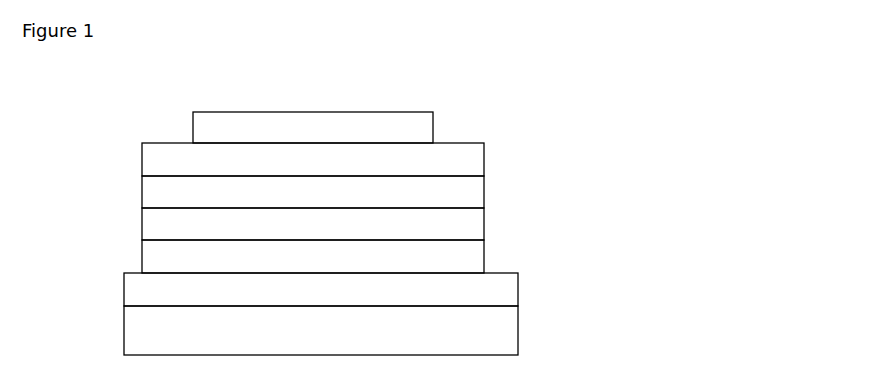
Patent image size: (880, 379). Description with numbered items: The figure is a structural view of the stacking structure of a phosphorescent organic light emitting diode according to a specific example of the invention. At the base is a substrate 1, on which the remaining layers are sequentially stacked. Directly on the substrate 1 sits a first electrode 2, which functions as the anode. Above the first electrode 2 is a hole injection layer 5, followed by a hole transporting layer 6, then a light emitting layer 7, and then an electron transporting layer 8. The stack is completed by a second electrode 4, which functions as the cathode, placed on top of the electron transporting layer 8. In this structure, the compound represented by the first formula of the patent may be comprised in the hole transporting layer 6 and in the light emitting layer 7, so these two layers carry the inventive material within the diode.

The substrate 1 is at (500, 339).
The first electrode 2 is at (500, 291).
The second electrode 4 is at (417, 127).
The hole injection layer 5 is at (484, 257).
The hole transporting layer 6 is at (484, 225).
The light emitting layer 7 is at (467, 192).
The electron transporting layer 8 is at (467, 160).